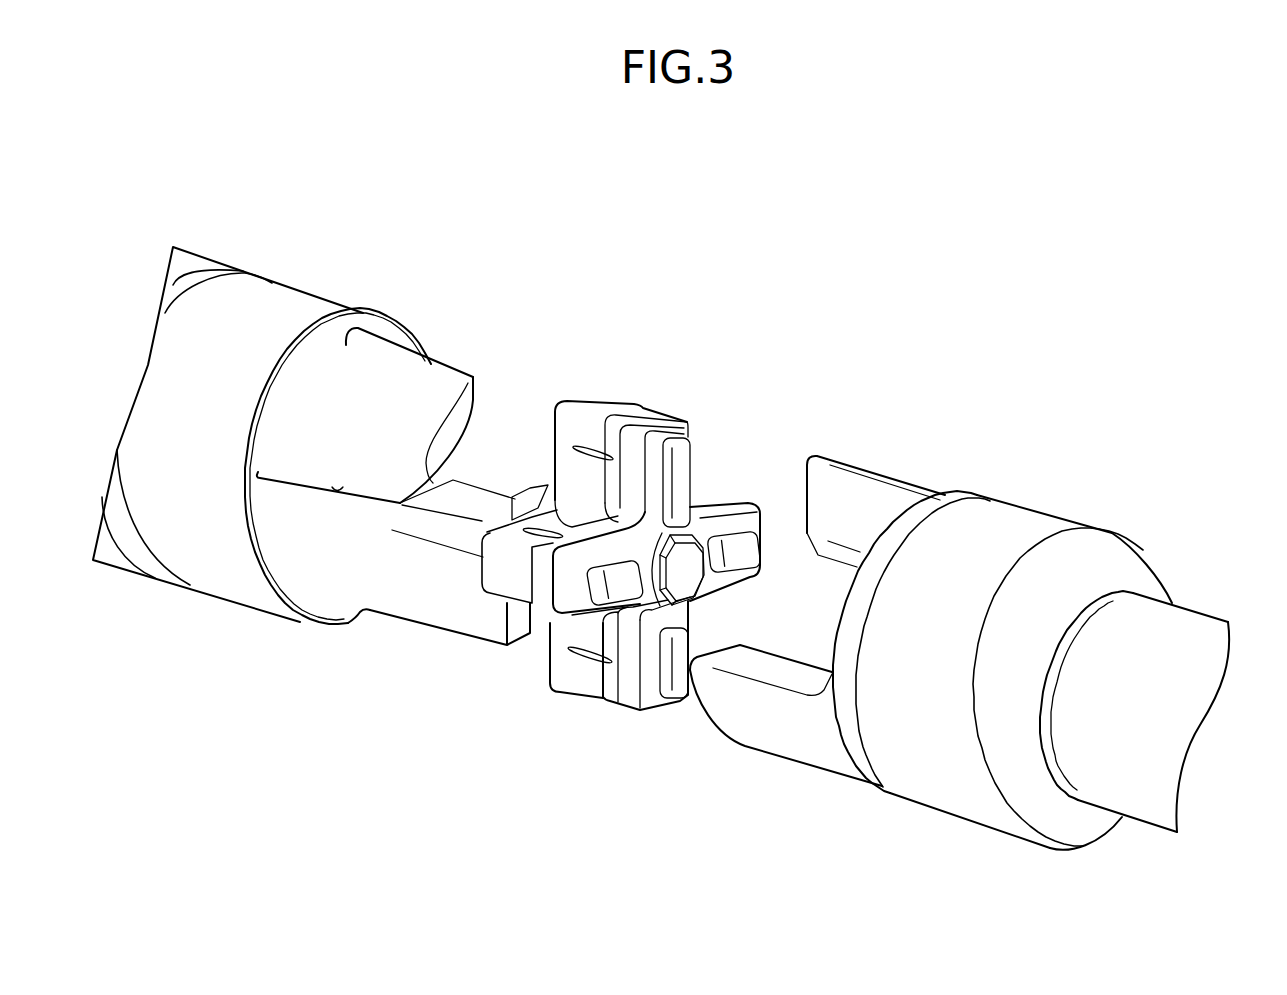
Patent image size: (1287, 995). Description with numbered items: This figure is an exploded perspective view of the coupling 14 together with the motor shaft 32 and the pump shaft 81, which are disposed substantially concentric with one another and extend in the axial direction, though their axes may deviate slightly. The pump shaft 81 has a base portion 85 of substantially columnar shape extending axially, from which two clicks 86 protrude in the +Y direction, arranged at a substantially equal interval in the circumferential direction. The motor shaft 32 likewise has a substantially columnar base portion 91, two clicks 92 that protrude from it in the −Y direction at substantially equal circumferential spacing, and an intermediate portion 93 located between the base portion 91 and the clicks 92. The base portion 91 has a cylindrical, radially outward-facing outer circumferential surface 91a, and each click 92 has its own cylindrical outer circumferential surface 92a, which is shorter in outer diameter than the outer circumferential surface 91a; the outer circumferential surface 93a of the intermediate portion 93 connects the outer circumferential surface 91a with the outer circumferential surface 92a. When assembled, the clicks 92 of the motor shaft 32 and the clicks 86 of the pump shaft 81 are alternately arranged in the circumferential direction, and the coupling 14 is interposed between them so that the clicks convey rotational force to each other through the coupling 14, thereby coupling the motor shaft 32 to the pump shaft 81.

The pump shaft 81 is at (203, 252).
The base portion 85 is at (274, 305).
The clicks 86 is at (400, 383).
The coupling 14 is at (618, 402).
The clicks 92 is at (843, 492).
The outer circumferential surface 92a is at (762, 727).
The intermediate portion 93 is at (911, 595).
The outer circumferential surface 93a is at (907, 520).
The base portion 91 is at (1031, 635).
The outer circumferential surface 91a is at (1033, 530).
The motor shaft 32 is at (1183, 609).